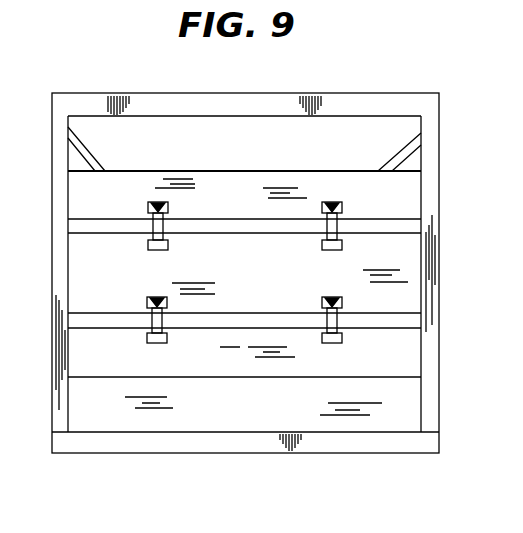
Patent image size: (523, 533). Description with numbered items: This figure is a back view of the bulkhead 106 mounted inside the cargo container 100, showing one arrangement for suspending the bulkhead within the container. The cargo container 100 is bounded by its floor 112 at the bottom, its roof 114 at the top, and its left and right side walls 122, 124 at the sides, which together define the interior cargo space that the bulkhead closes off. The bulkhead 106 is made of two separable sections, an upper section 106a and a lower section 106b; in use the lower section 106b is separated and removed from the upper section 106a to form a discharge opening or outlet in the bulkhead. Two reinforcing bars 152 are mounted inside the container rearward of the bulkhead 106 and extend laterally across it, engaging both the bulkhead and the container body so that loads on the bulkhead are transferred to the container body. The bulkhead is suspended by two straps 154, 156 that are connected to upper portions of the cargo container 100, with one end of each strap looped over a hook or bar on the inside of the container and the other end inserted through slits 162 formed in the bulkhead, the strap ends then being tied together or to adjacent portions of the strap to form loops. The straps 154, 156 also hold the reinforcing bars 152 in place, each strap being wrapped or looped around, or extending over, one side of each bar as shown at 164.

The cargo container 100 is at (276, 94).
The bulkhead 106 is at (205, 165).
The upper bulkhead section 106a is at (416, 212).
The lower bulkhead section 106b is at (292, 413).
The floor 112 is at (332, 453).
The roof 114 is at (180, 95).
The left side wall 122 is at (440, 183).
The right side wall 124 is at (53, 405).
The reinforcing bars 152 is at (242, 219).
The strap 154 is at (94, 160).
The strap 156 is at (391, 160).
The slits 162 is at (148, 246).
The strap wrap around reinforcing bar 164 is at (168, 209).